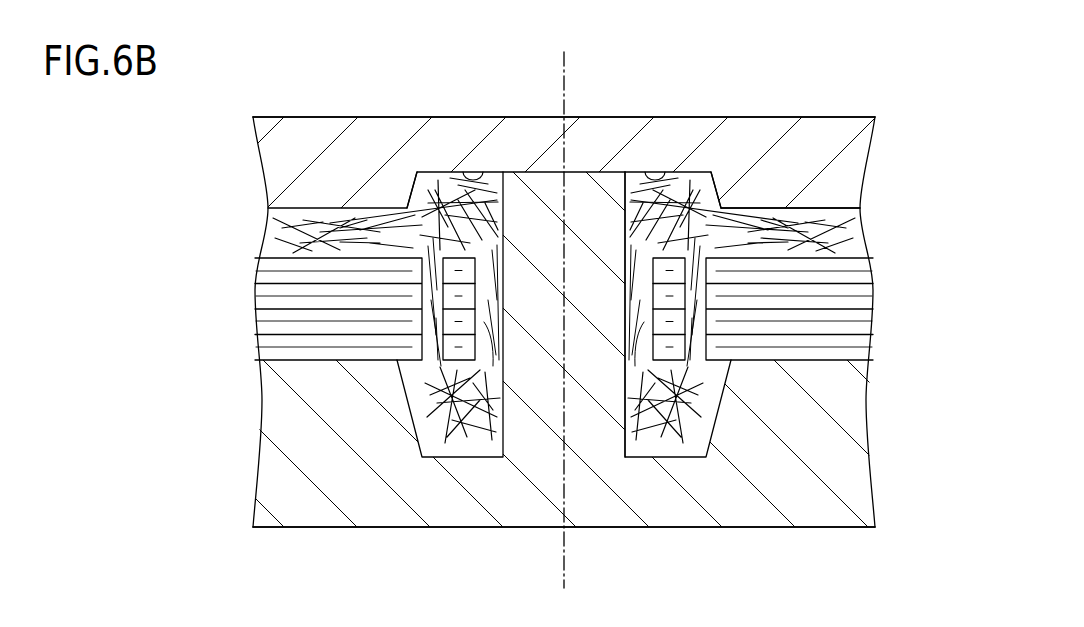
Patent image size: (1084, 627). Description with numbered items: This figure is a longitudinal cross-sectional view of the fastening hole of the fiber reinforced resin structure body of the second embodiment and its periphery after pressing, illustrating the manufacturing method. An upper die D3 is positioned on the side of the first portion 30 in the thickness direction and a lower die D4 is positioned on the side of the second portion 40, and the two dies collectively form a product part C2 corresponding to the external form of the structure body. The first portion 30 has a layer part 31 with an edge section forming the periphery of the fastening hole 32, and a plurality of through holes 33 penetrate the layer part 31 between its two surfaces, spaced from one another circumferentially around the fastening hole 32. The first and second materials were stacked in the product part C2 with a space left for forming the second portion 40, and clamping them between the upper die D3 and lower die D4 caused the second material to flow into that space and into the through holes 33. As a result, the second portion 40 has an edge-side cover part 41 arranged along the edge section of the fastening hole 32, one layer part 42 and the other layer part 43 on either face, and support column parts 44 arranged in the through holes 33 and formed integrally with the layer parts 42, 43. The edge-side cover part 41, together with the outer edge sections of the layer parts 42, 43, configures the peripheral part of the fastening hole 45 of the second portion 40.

The first portion 30 is at (859, 307).
The layer part 31 is at (814, 333).
The fastening hole 32 is at (474, 316).
The through holes 33 is at (427, 366).
The second portion 40 is at (878, 234).
The edge-side cover part 41 is at (640, 328).
The one layer part 42 is at (787, 212).
The other layer part 43 is at (680, 443).
The support column parts 44 is at (412, 203).
The fastening hole 45 is at (625, 257).
The product part C2 is at (462, 170).
The upper die D3 is at (319, 106).
The lower die D4 is at (319, 538).